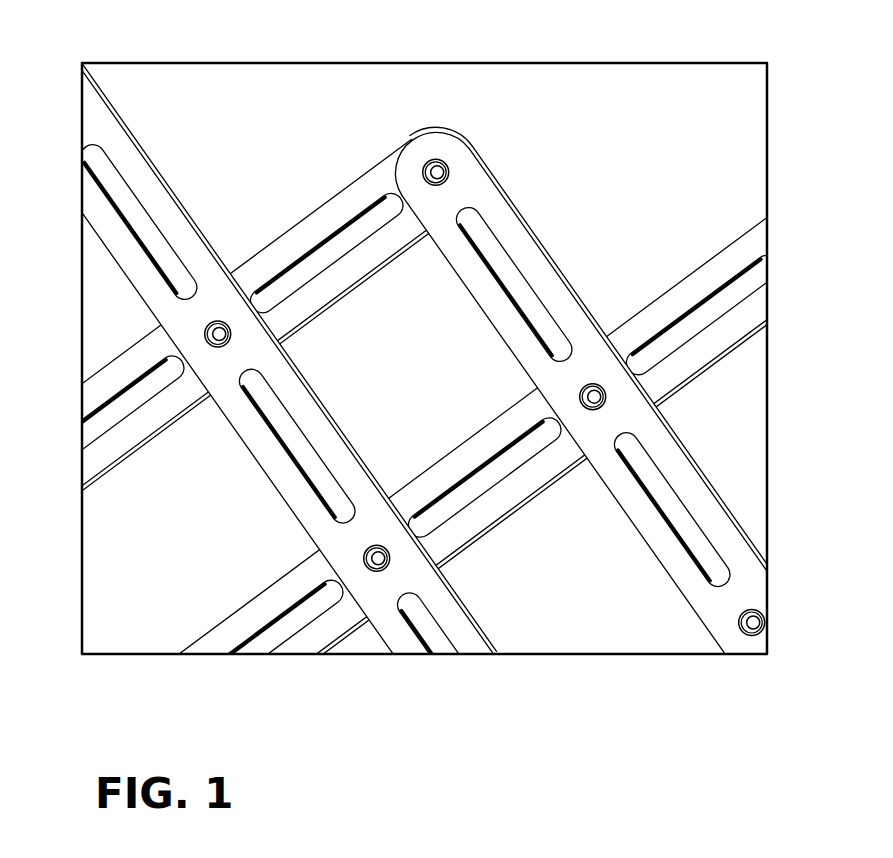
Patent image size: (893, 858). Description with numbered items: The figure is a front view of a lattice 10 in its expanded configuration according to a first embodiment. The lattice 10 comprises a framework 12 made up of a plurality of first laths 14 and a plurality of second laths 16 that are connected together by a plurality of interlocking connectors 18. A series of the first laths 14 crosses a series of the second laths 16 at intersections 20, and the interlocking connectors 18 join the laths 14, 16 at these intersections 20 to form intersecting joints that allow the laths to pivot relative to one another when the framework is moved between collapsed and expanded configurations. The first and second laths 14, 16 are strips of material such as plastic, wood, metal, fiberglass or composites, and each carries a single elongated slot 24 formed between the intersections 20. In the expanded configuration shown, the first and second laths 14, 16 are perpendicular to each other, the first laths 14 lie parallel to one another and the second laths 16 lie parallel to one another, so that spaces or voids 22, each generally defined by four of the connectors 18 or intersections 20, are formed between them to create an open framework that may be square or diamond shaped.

The lattice 10 is at (206, 110).
The framework 12 is at (696, 264).
The first laths 14 is at (513, 198).
The second laths 16 is at (426, 388).
The interlocking connectors 18 is at (444, 160).
The intersections 20 is at (410, 130).
The voids 22 is at (396, 375).
The slots 24 is at (510, 240).